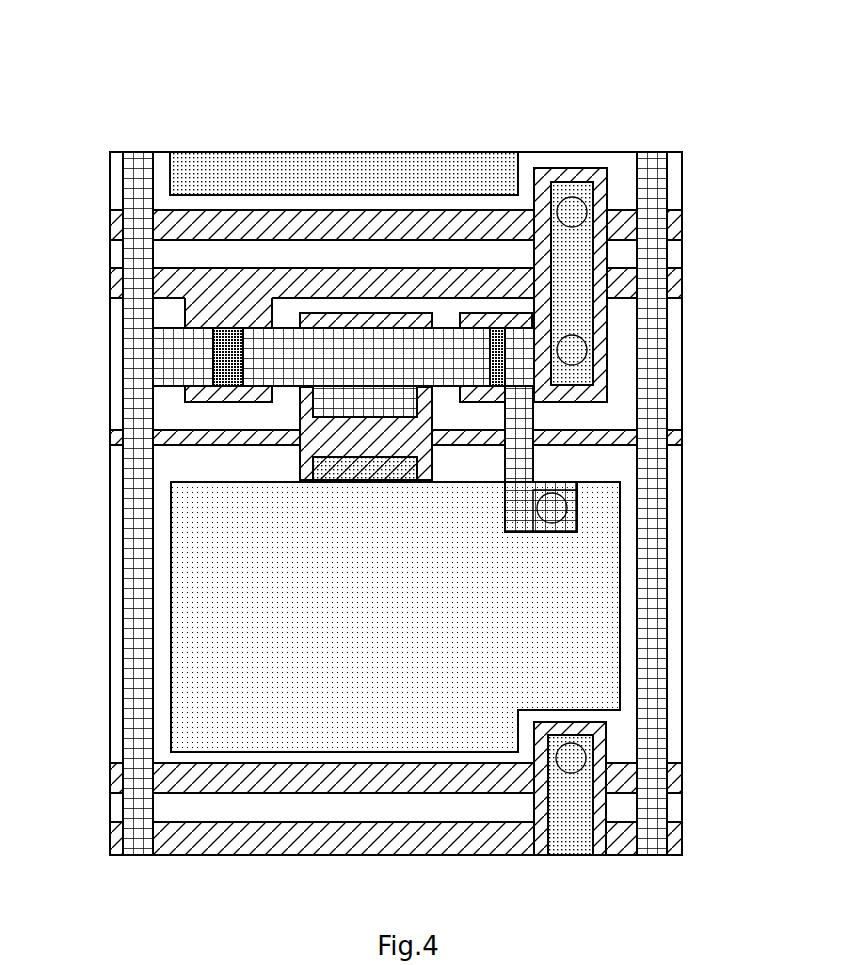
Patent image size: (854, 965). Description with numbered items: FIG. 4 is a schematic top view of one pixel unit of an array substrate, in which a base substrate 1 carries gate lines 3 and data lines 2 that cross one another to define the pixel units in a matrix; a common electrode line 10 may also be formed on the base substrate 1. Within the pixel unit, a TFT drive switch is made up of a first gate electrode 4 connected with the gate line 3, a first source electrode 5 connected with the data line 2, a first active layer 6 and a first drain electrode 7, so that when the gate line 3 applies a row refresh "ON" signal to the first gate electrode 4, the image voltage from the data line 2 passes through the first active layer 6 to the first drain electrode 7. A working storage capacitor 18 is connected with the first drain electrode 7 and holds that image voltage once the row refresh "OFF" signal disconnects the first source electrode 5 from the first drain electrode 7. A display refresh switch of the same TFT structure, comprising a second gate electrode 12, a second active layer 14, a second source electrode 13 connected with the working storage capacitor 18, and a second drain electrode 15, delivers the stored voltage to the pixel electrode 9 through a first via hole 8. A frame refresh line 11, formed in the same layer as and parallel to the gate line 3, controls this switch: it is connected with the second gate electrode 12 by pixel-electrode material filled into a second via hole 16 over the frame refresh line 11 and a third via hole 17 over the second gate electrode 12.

The base substrate 1 is at (163, 163).
The data line 2 is at (143, 173).
The gate line 3 is at (347, 277).
The first gate electrode 4 is at (230, 315).
The first source electrode 5 is at (178, 352).
The first active layer 6 is at (228, 360).
The first drain electrode 7 is at (258, 355).
The first via hole 8 is at (552, 503).
The pixel electrode 9 is at (220, 567).
The common electrode line 10 is at (112, 448).
The frame refresh line 11 is at (393, 225).
The second gate electrode 12 is at (605, 328).
The second source electrode 13 is at (475, 357).
The second active layer 14 is at (494, 347).
The second drain electrode 15 is at (515, 357).
The second via hole 16 is at (572, 212).
The third via hole 17 is at (572, 358).
The working storage capacitor 18 is at (358, 358).